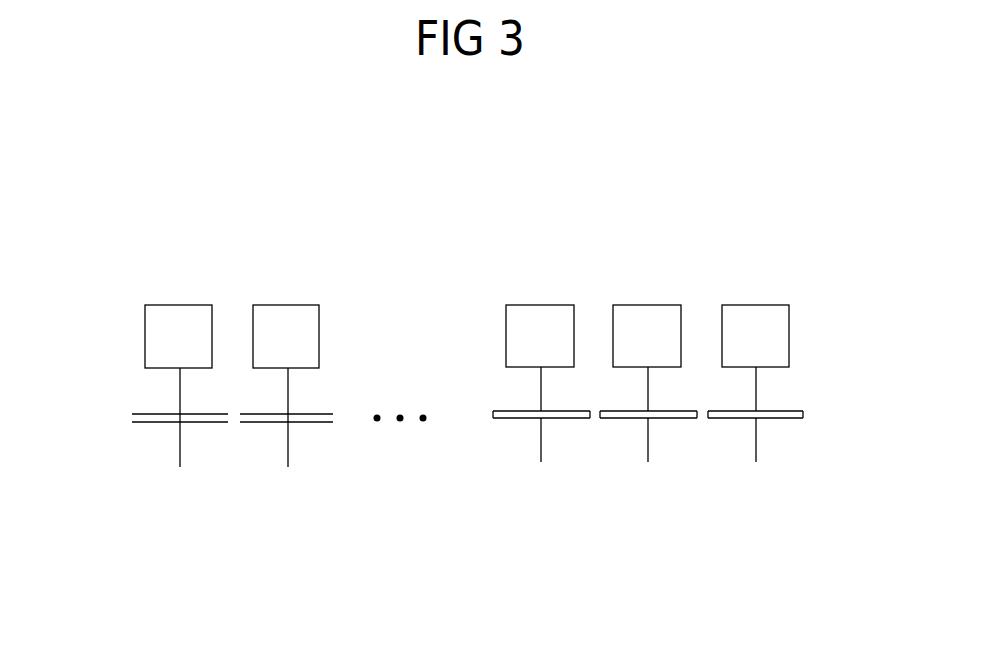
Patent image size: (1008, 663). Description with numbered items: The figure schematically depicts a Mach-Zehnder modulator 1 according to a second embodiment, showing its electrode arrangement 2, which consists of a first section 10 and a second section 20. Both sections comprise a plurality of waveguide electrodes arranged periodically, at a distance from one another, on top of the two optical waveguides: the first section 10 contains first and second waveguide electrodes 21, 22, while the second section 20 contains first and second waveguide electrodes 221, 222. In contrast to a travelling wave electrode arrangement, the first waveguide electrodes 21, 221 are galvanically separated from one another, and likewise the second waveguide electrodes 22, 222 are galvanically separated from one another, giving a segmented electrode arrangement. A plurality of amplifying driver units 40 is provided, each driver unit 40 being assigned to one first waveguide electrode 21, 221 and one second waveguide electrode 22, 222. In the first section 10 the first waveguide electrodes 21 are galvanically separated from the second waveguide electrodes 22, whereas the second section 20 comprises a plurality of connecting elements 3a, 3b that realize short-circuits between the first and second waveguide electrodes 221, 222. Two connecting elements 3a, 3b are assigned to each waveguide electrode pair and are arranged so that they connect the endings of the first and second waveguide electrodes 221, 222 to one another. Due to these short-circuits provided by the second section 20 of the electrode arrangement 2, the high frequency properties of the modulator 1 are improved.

The Mach-Zehnder modulator 1 is at (190, 220).
The first section 10 is at (280, 268).
The second section 20 is at (645, 263).
The electrode arrangement 2 is at (447, 363).
The first waveguide electrode 21 is at (140, 413).
The second waveguide electrode 22 is at (170, 423).
The first waveguide electrode 221 is at (508, 410).
The second waveguide electrode 222 is at (522, 420).
The connecting element 3a is at (492, 417).
The connecting element 3b is at (592, 410).
The driver unit 40 is at (163, 337).